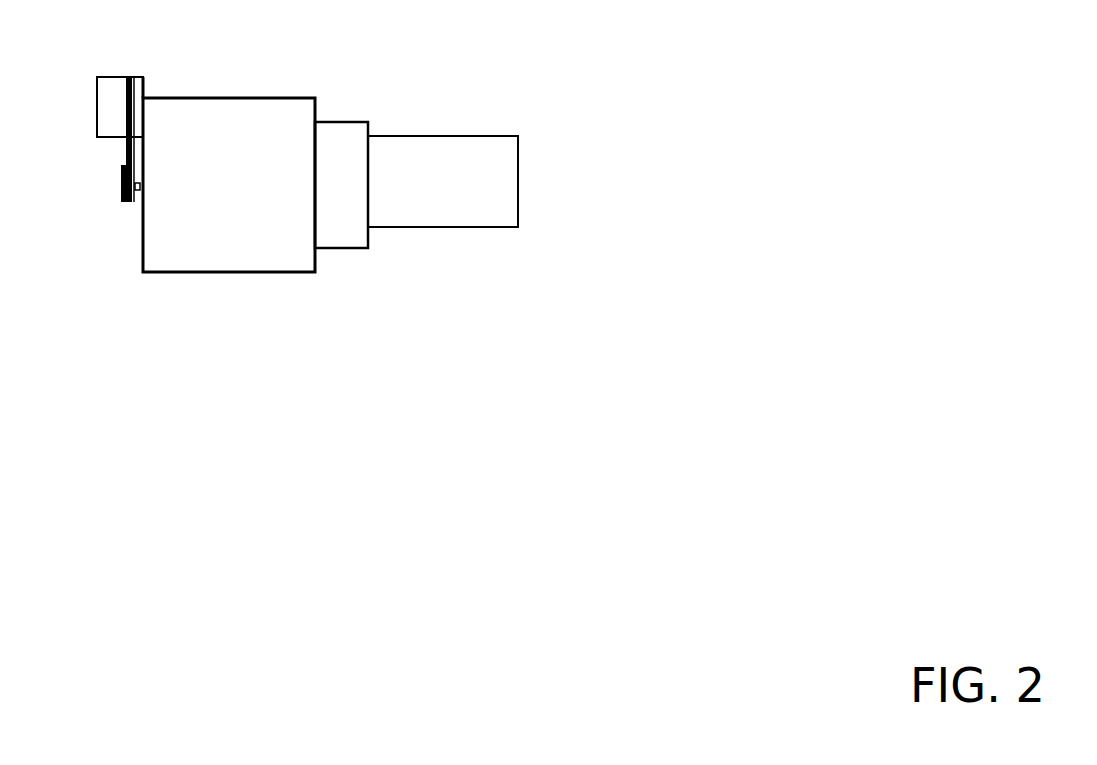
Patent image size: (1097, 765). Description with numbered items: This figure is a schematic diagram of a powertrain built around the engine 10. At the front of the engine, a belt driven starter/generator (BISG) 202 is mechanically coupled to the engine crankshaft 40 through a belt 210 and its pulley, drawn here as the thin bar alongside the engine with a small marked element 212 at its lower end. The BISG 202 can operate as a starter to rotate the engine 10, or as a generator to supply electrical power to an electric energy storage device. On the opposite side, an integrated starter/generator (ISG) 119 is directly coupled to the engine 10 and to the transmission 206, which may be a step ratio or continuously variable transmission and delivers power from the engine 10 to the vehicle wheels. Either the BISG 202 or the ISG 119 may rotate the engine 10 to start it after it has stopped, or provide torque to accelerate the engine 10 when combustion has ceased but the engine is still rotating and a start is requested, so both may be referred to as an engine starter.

The engine 10 is at (229, 185).
The integrated starter/generator (ISG) 119 is at (335, 122).
The transmission 206 is at (445, 136).
The belt driven starter/generator (BISG) 202 is at (112, 77).
The belt 210 is at (123, 146).
The thickened portion 212 is at (120, 181).
The engine crankshaft 40 is at (137, 190).